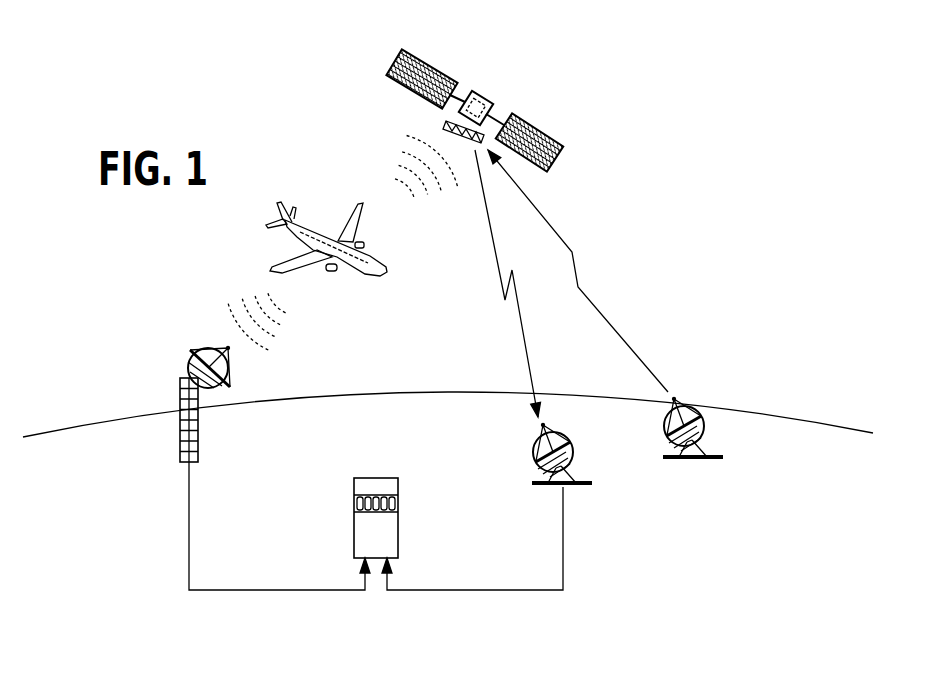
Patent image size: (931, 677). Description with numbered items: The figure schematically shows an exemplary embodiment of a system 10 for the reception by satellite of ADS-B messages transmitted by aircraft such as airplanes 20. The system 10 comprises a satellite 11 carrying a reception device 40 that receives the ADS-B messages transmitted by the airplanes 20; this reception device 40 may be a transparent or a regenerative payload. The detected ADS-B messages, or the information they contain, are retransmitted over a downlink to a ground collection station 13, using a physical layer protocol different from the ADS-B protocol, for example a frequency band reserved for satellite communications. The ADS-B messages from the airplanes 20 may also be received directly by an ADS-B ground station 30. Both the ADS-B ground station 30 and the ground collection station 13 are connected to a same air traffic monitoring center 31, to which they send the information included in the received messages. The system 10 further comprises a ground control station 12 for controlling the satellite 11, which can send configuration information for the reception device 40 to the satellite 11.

The system for the reception by satellite of ADS-B messages 10 is at (657, 245).
The satellite 11 is at (474, 98).
The reception device 40 is at (485, 104).
The airplane 20 is at (315, 227).
The ADS-B ground station 30 is at (180, 443).
The air traffic monitoring center 31 is at (398, 522).
The ground collection station 13 is at (565, 487).
The ground control station 12 is at (703, 462).